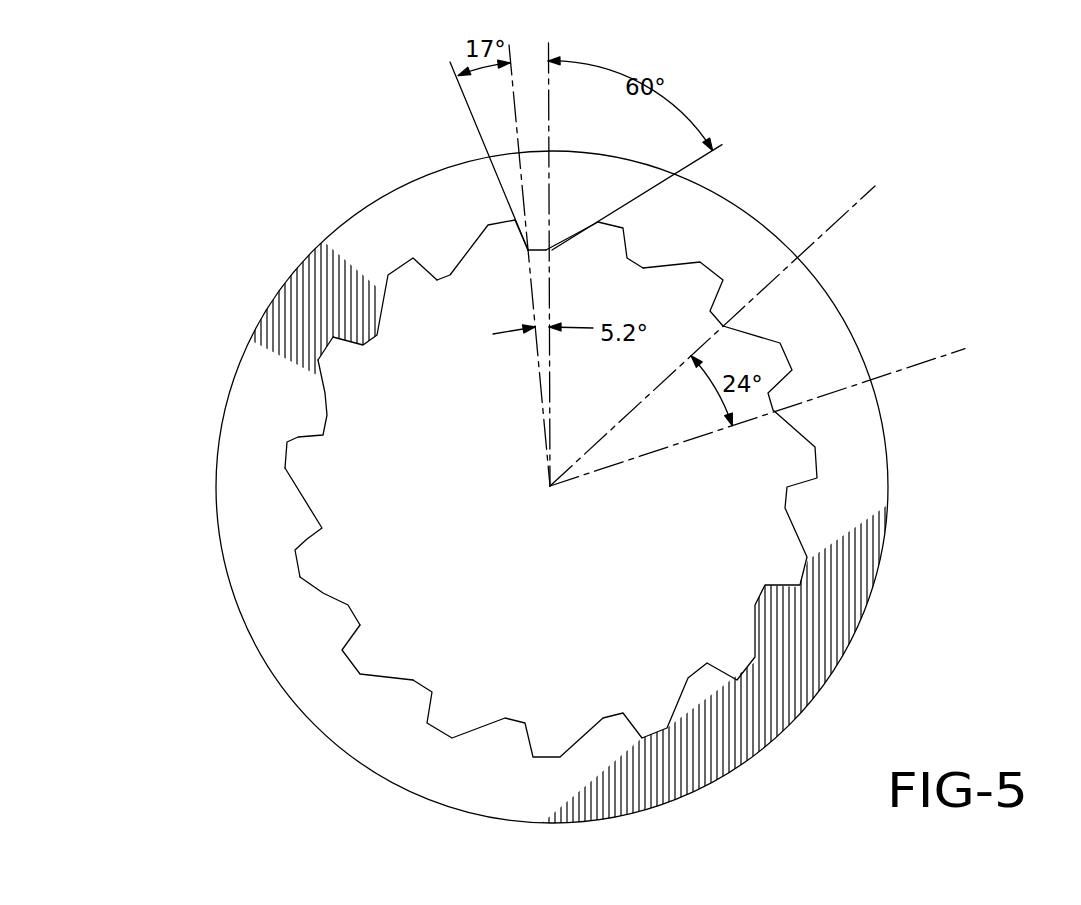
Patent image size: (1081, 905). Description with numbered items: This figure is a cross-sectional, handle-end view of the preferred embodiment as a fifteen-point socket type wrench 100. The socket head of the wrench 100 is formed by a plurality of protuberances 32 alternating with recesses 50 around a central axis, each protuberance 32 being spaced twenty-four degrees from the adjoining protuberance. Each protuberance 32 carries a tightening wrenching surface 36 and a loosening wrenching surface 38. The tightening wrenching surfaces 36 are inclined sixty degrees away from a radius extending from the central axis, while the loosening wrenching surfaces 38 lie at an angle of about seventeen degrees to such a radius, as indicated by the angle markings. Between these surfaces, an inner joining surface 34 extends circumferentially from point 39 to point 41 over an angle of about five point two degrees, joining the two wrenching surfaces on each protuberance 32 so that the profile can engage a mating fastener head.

The socket type wrench 100 is at (265, 188).
The protuberance 32 is at (312, 420).
The inner joining surface 34 is at (542, 255).
The tightening wrenching surface 36 is at (308, 537).
The loosening wrenching surface 38 is at (325, 593).
The point 39 is at (528, 250).
The point 41 is at (546, 250).
The recess 50 is at (348, 665).